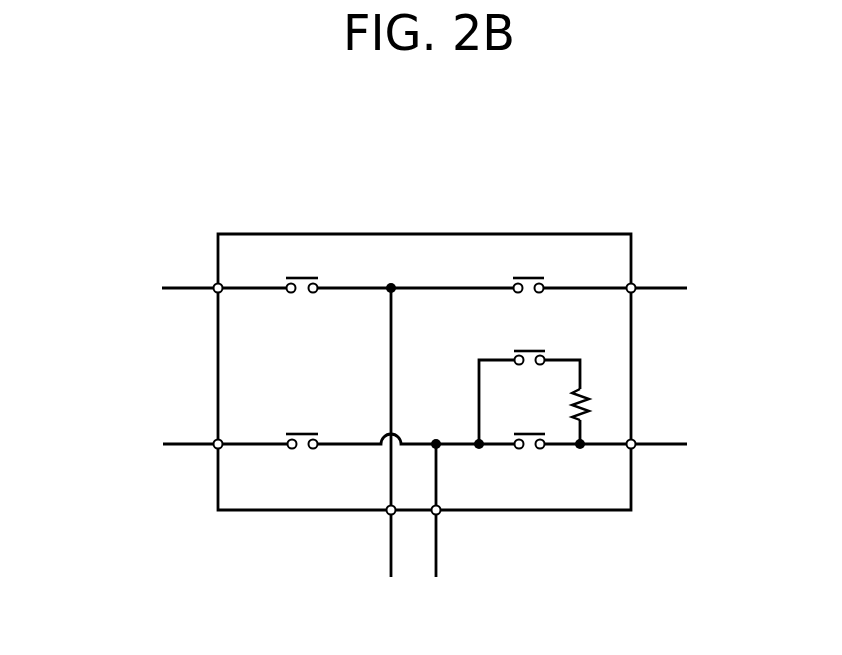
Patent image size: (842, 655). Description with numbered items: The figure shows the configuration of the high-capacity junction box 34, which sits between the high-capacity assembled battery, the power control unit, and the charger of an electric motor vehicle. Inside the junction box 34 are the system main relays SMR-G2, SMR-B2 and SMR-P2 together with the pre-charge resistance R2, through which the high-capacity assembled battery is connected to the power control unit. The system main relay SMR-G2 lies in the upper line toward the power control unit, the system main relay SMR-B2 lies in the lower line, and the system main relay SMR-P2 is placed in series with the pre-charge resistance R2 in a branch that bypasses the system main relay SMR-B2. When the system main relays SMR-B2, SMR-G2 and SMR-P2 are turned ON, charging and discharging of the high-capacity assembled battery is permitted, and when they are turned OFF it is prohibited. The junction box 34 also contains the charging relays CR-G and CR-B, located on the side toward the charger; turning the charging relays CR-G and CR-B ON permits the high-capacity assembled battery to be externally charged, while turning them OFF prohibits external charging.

The junction box 34 is at (372, 170).
The charging relay CR-G is at (306, 270).
The system main relay SMR-G2 is at (531, 267).
The system main relay SMR-P2 is at (532, 348).
The pre-charge resistance R2 is at (587, 404).
The charging relay CR-B is at (303, 450).
The system main relay SMR-B2 is at (531, 452).